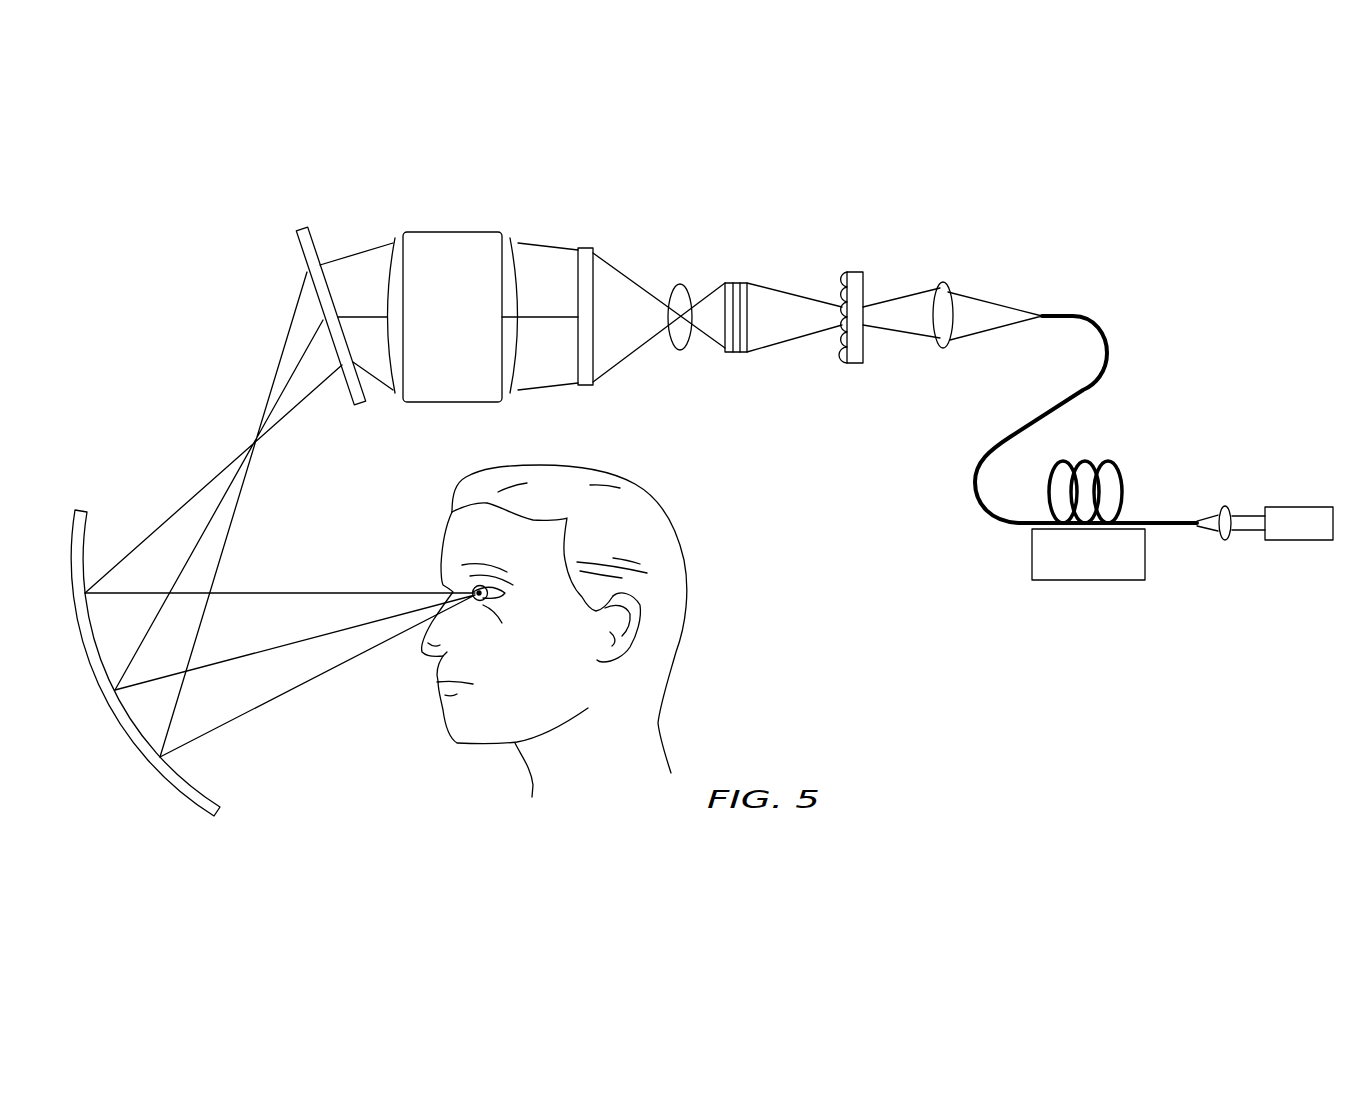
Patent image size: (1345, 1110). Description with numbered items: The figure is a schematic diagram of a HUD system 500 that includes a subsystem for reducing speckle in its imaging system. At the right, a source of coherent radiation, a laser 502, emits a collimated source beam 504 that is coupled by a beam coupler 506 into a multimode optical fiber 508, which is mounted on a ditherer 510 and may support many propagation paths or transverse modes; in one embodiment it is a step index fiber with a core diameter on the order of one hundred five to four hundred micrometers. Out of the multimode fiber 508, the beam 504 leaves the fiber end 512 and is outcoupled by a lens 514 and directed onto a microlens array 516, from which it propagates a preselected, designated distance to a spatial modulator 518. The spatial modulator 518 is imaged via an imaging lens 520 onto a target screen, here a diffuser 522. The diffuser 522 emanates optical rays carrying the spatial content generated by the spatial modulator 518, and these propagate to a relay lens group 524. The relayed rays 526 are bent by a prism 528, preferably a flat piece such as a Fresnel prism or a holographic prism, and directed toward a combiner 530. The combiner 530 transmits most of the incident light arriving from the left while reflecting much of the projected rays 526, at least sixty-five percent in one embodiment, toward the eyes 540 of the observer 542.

The HUD system 500 is at (933, 162).
The laser 502 is at (1298, 542).
The collimated source beam 504 is at (1247, 513).
The beam coupler 506 is at (1227, 543).
The multimode optical fiber 508 is at (1123, 472).
The ditherer 510 is at (1093, 582).
The optical fiber output end 512 is at (1012, 303).
The lens 514 is at (942, 283).
The microlens array 516 is at (857, 270).
The spatial modulator 518 is at (735, 282).
The imaging lens 520 is at (678, 283).
The diffuser 522 is at (588, 248).
The relay lens group 524 is at (453, 232).
The relayed rays 526 is at (365, 255).
The prism 528 is at (305, 227).
The combiner 530 is at (118, 728).
The eyes 540 is at (488, 603).
The observer 542 is at (685, 635).